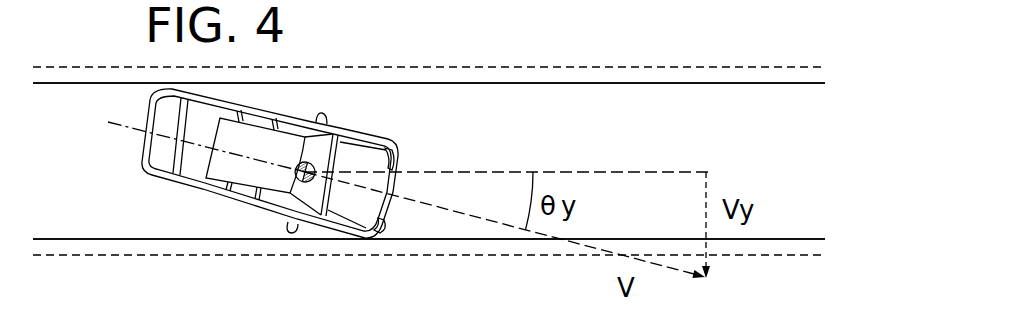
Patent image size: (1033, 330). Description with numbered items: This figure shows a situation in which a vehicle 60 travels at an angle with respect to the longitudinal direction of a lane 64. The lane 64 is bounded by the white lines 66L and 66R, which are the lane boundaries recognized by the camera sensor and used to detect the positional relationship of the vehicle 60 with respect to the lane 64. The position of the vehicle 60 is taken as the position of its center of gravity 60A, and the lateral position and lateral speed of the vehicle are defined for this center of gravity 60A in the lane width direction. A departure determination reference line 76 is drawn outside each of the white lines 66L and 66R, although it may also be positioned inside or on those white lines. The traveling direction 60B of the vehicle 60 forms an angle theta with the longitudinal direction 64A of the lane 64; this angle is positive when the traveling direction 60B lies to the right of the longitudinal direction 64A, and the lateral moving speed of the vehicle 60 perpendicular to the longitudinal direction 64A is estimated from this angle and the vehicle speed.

The vehicle 60 is at (152, 180).
The center of gravity 60A is at (306, 183).
The traveling direction 60B is at (447, 210).
The lane 64 is at (795, 143).
The longitudinal direction of the lane 64A is at (585, 170).
The white line 66L is at (497, 82).
The white line 66R is at (168, 240).
The departure determination reference line 76 is at (712, 66).